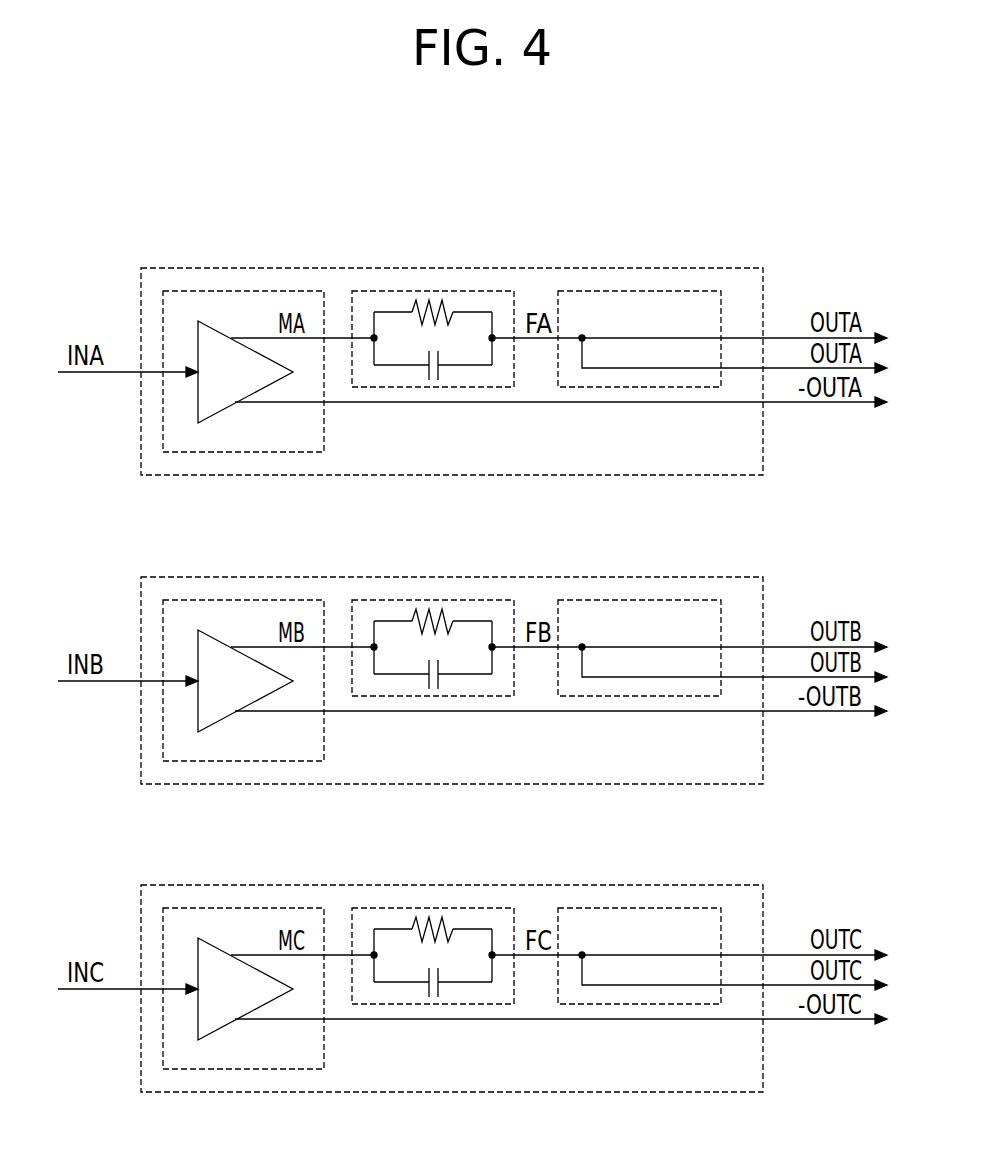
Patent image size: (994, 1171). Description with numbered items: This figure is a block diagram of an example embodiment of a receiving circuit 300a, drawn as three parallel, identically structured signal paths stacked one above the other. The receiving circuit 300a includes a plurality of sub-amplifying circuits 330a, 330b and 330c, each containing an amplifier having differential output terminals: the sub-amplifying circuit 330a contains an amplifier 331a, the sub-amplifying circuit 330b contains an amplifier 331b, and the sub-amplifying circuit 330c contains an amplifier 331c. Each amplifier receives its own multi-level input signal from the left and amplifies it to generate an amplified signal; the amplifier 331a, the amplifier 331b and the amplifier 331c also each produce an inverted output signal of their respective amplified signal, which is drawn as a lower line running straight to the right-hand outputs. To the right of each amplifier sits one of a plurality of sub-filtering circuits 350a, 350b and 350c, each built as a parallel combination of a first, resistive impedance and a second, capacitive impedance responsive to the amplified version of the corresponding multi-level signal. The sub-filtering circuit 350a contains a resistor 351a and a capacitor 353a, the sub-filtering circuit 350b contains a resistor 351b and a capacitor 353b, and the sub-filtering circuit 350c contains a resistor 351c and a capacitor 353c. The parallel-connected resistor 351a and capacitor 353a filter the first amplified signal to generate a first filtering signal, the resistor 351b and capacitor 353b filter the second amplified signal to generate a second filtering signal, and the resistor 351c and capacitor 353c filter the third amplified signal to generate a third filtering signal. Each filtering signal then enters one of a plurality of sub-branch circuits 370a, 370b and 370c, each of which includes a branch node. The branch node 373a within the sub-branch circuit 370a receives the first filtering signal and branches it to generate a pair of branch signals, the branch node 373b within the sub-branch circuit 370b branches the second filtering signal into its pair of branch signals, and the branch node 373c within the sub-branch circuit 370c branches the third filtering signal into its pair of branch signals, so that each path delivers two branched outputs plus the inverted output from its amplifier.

The receiving circuit 300a is at (525, 158).
The sub-amplifying circuit 330a is at (290, 291).
The amplifier 331a is at (210, 328).
The sub-filtering circuit 350a is at (500, 291).
The resistor 351a is at (427, 300).
The capacitor 353a is at (438, 381).
The sub-branch circuit 370a is at (665, 291).
The branch node 373a is at (581, 336).
The sub-amplifying circuit 330b is at (243, 644).
The amplifier 331b is at (241, 629).
The sub-filtering circuit 350b is at (439, 652).
The resistor 351b is at (428, 580).
The capacitor 353b is at (433, 718).
The sub-branch circuit 370b is at (719, 611).
The branch node 373b is at (719, 604).
The sub-amplifying circuit 330c is at (243, 952).
The amplifier 331c is at (241, 937).
The sub-filtering circuit 350c is at (439, 960).
The resistor 351c is at (428, 888).
The capacitor 353c is at (433, 1026).
The sub-branch circuit 370c is at (719, 919).
The branch node 373c is at (719, 912).